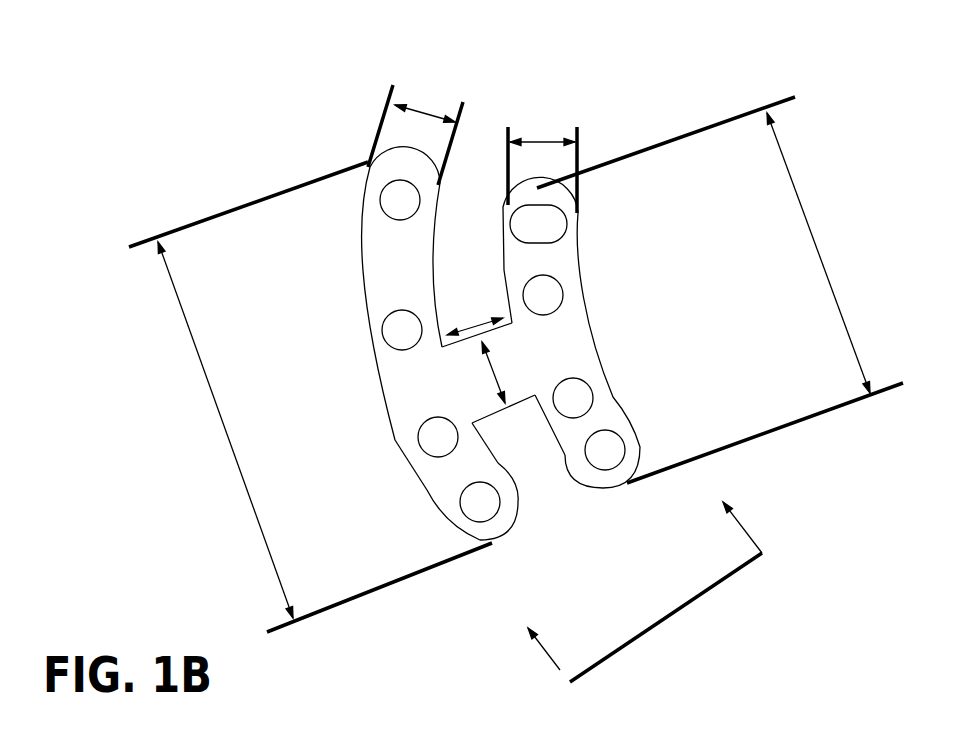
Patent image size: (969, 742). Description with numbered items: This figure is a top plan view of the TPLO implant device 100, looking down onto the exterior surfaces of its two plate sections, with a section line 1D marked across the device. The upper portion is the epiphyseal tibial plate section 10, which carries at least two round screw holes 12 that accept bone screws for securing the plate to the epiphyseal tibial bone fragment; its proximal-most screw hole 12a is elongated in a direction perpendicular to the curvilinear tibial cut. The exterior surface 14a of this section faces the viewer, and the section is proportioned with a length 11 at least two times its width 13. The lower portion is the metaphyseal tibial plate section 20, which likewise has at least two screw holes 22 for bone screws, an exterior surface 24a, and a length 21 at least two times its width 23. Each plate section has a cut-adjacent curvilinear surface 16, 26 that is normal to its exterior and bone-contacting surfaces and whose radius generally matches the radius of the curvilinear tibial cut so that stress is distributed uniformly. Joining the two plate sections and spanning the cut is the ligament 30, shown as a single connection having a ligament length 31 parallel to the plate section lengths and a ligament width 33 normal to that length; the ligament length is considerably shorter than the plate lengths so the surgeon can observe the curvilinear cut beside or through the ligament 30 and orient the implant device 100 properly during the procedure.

The implant device 100 is at (223, 148).
The epiphyseal tibial plate section 10 is at (582, 370).
The length 11 is at (830, 280).
The screw holes 12 is at (560, 288).
The screw hole 12a is at (570, 223).
The width 13 is at (540, 142).
The exterior surface 14a is at (575, 352).
The cut-adjacent curvilinear surface 16 is at (558, 462).
The metaphyseal tibial plate section 20 is at (488, 528).
The length 21 is at (208, 380).
The screw holes 22 is at (397, 310).
The width 23 is at (427, 110).
The exterior surface 24a is at (450, 480).
The cut-adjacent curvilinear surface 26 is at (510, 457).
The ligament 30 is at (480, 395).
The ligament length 31 is at (490, 380).
The ligament width 33 is at (468, 328).
The section line 1D is at (630, 584).